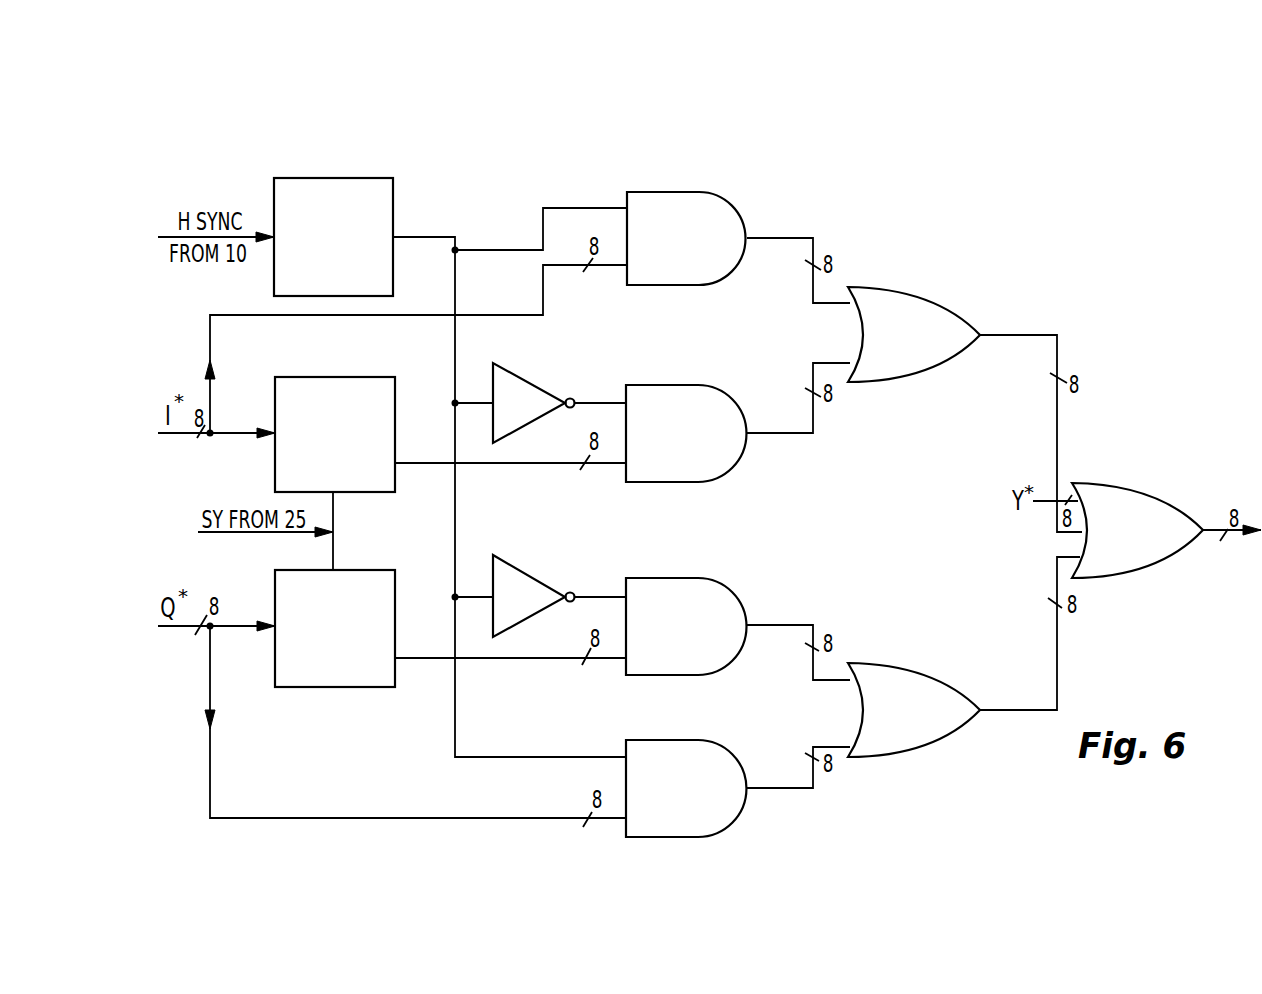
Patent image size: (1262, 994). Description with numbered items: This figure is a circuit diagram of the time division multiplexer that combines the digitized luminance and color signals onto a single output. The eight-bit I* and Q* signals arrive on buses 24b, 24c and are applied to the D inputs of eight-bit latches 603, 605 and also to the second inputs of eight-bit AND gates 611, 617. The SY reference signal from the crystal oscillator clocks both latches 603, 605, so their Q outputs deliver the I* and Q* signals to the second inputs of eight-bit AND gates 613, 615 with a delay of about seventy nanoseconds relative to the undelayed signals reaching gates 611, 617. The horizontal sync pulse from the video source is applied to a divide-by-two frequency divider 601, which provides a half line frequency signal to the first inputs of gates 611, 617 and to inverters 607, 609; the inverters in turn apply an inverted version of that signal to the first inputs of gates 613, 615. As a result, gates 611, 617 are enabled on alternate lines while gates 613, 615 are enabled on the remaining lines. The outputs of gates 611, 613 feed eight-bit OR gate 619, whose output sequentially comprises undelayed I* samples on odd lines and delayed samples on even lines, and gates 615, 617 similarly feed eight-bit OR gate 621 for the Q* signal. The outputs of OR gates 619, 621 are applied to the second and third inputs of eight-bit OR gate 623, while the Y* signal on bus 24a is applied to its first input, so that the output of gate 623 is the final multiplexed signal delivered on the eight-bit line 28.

The divide-by-two frequency divider 601 is at (333, 225).
The 8-bit latch 603 is at (351, 420).
The 8-bit latch 605 is at (336, 614).
The inverter 607 is at (534, 403).
The inverter 609 is at (534, 596).
The 8-bit AND gate 611 is at (687, 224).
The 8-bit AND gate 613 is at (694, 424).
The 8-bit AND gate 615 is at (694, 620).
The 8-bit AND gate 617 is at (694, 782).
The 8-bit OR gate 619 is at (914, 325).
The 8-bit OR gate 621 is at (914, 703).
The 8-bit OR gate 623 is at (1137, 522).
The eight-bit bus 24a is at (1068, 475).
The eight-bit bus 24b is at (216, 445).
The eight-bit bus 24c is at (216, 644).
The eight-bit line 28 is at (1232, 548).